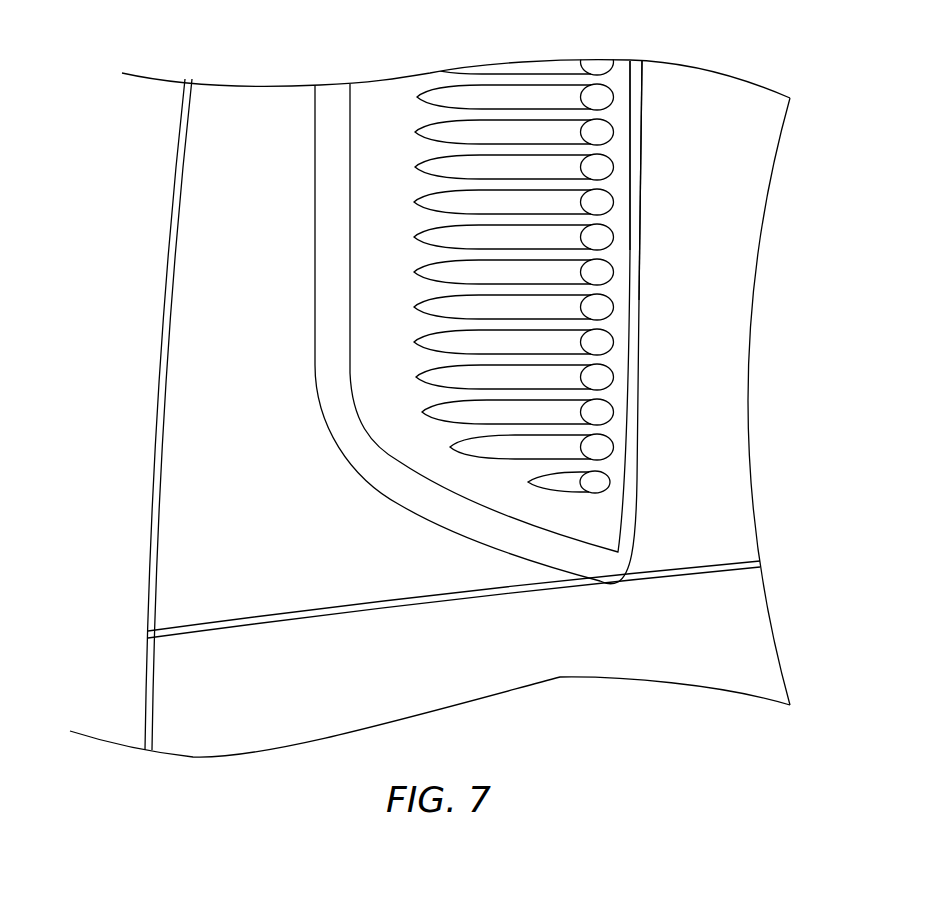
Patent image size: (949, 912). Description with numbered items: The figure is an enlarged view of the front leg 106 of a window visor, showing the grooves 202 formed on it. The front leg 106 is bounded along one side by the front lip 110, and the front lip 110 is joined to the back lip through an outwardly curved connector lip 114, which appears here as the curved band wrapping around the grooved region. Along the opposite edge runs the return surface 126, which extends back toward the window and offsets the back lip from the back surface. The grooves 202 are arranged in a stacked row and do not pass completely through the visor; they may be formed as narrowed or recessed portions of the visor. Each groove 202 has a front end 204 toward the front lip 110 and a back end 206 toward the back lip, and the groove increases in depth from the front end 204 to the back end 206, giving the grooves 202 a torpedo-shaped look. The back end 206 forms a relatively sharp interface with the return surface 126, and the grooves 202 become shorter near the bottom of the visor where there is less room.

The front leg 106 is at (382, 260).
The front lip 110 is at (330, 376).
The connector lips 114 is at (567, 558).
The return surface 126 is at (635, 183).
The grooves 202 is at (592, 256).
The front end 204 is at (432, 95).
The back end 206 is at (602, 97).